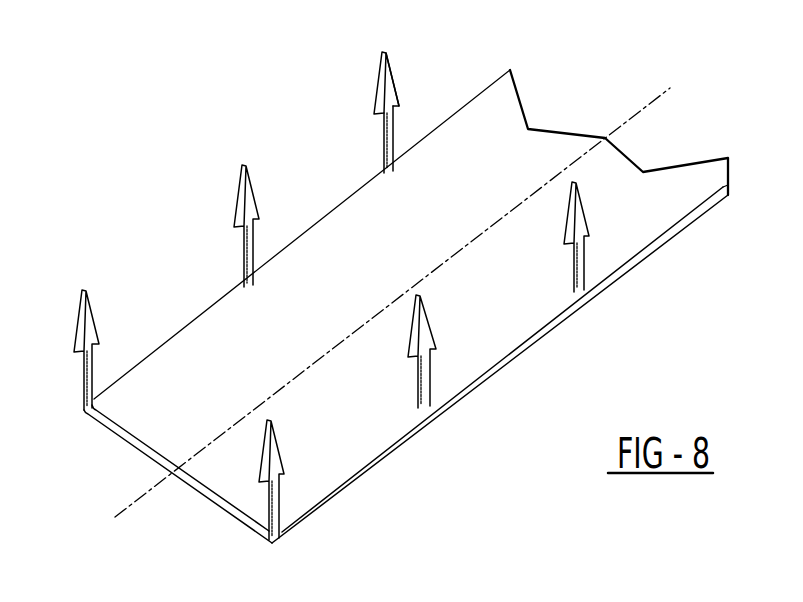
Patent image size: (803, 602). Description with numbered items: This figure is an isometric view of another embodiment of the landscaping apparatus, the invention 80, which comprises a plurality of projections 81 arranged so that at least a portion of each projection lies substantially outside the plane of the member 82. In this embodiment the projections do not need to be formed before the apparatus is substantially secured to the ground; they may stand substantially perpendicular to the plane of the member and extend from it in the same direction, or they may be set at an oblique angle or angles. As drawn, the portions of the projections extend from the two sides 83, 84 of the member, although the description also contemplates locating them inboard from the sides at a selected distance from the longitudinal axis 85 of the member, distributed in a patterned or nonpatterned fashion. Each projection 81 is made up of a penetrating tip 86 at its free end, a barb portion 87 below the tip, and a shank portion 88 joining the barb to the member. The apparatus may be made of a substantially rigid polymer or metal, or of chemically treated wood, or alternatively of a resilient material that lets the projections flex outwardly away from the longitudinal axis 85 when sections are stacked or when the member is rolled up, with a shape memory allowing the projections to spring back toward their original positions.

The invention 80 is at (78, 228).
The projections 81 is at (271, 176).
The member 82 is at (321, 273).
The side 83 is at (197, 316).
The side 84 is at (380, 453).
The longitudinal axis 85 is at (130, 503).
The penetrating tip 86 is at (389, 53).
The barb portion 87 is at (400, 102).
The shank portion 88 is at (393, 135).